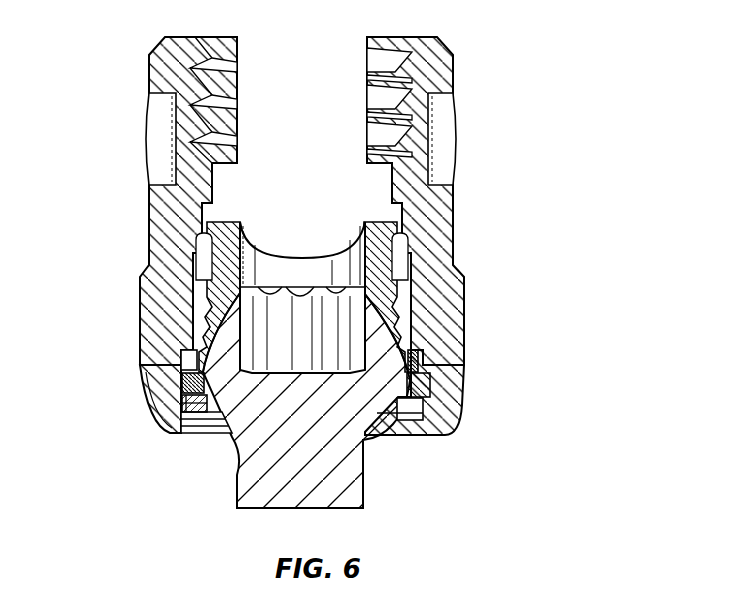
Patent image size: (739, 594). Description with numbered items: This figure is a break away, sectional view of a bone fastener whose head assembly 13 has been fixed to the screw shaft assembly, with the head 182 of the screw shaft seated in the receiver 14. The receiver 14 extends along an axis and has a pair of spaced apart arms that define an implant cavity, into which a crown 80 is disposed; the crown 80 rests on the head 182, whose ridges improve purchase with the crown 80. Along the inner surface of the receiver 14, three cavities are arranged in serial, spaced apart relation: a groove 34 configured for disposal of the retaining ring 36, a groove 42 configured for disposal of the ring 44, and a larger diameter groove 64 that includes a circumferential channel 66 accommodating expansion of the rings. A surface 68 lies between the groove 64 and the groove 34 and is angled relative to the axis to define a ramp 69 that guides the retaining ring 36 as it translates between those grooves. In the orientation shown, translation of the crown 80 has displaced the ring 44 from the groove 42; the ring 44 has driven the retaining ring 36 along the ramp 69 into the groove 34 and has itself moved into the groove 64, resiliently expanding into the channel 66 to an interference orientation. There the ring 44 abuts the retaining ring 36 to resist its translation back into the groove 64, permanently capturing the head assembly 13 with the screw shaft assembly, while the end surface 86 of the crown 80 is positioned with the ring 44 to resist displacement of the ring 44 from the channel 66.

The head assembly 13 is at (327, 272).
The receiver 14 is at (158, 202).
The crown 80 is at (393, 276).
The head 182 is at (370, 382).
The groove 42 is at (178, 372).
The ring 44 is at (176, 380).
The groove 64 is at (178, 393).
The surface 68 is at (179, 397).
The ramp 69 is at (180, 400).
The groove 34 is at (182, 404).
The retaining ring 36 is at (183, 408).
The end surface 86 is at (418, 358).
The circumferential channel 66 is at (432, 384).